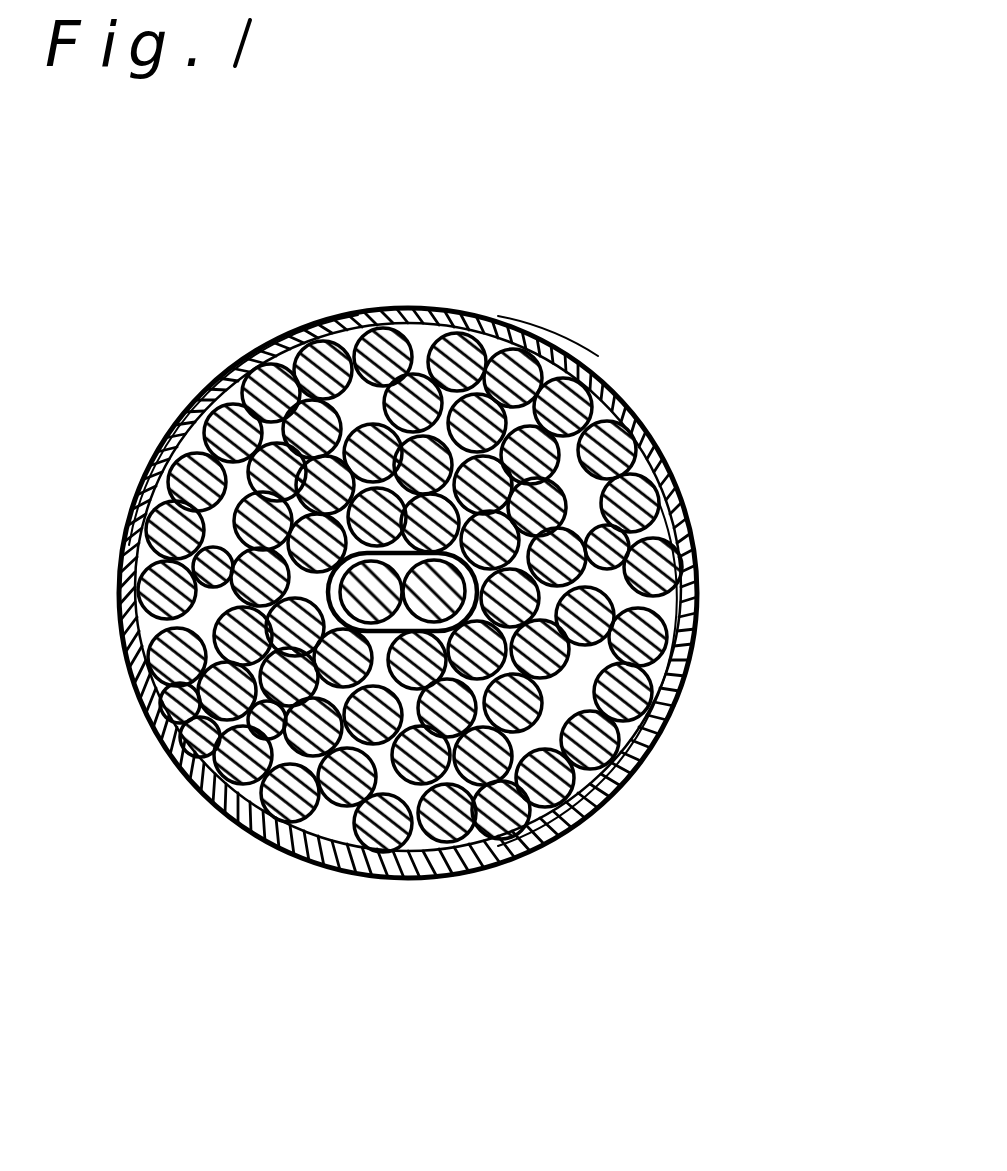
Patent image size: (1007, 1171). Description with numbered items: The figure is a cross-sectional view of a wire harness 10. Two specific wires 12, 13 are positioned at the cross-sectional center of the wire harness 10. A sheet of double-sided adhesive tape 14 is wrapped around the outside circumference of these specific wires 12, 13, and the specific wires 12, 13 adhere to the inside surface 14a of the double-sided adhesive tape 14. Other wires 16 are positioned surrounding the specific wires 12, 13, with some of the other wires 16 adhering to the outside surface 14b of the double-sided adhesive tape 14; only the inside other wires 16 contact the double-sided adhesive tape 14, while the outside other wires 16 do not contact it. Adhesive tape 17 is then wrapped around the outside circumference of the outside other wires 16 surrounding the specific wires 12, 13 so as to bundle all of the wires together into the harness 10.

The wire harness 10 is at (188, 362).
The specific wire 12 is at (380, 640).
The specific wire 13 is at (440, 630).
The double-sided adhesive tape 14 is at (650, 710).
The inside surface 14a is at (212, 798).
The outside surface 14b is at (470, 582).
The other wires 16 is at (607, 448).
The adhesive tape 17 is at (553, 348).